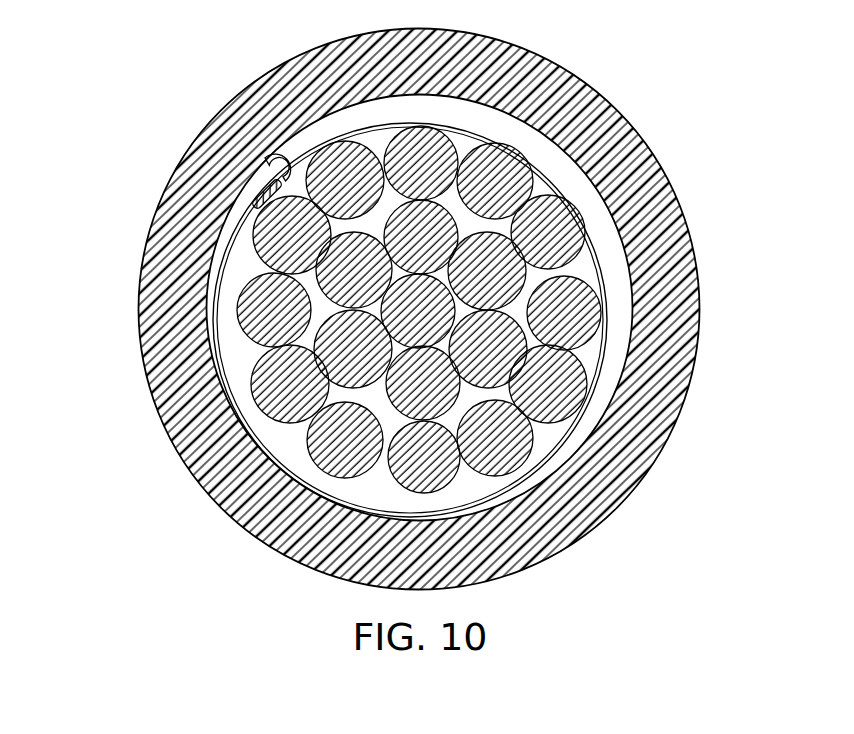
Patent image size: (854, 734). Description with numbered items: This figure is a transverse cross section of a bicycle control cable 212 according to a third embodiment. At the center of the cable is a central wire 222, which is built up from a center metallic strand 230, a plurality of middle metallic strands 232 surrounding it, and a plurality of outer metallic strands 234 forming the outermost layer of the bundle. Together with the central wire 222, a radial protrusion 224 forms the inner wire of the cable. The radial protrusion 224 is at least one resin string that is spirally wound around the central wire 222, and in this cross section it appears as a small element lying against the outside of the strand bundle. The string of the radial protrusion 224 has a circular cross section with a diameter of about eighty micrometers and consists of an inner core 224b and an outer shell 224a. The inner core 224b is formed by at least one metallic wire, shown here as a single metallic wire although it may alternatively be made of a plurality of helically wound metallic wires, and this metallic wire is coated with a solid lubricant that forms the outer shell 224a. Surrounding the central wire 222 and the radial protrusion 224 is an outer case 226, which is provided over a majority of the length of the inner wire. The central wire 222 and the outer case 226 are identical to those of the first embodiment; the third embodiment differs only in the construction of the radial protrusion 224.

The bicycle control cable 212 is at (401, 295).
The central wire 222 is at (606, 357).
The radial protrusion 224 is at (166, 155).
The outer shell 224a is at (256, 196).
The inner core 224b is at (266, 156).
The outer case 226 is at (637, 507).
The center metallic strand 230 is at (414, 306).
The middle metallic strands 232 is at (350, 268).
The outer metallic strands 234 is at (289, 385).